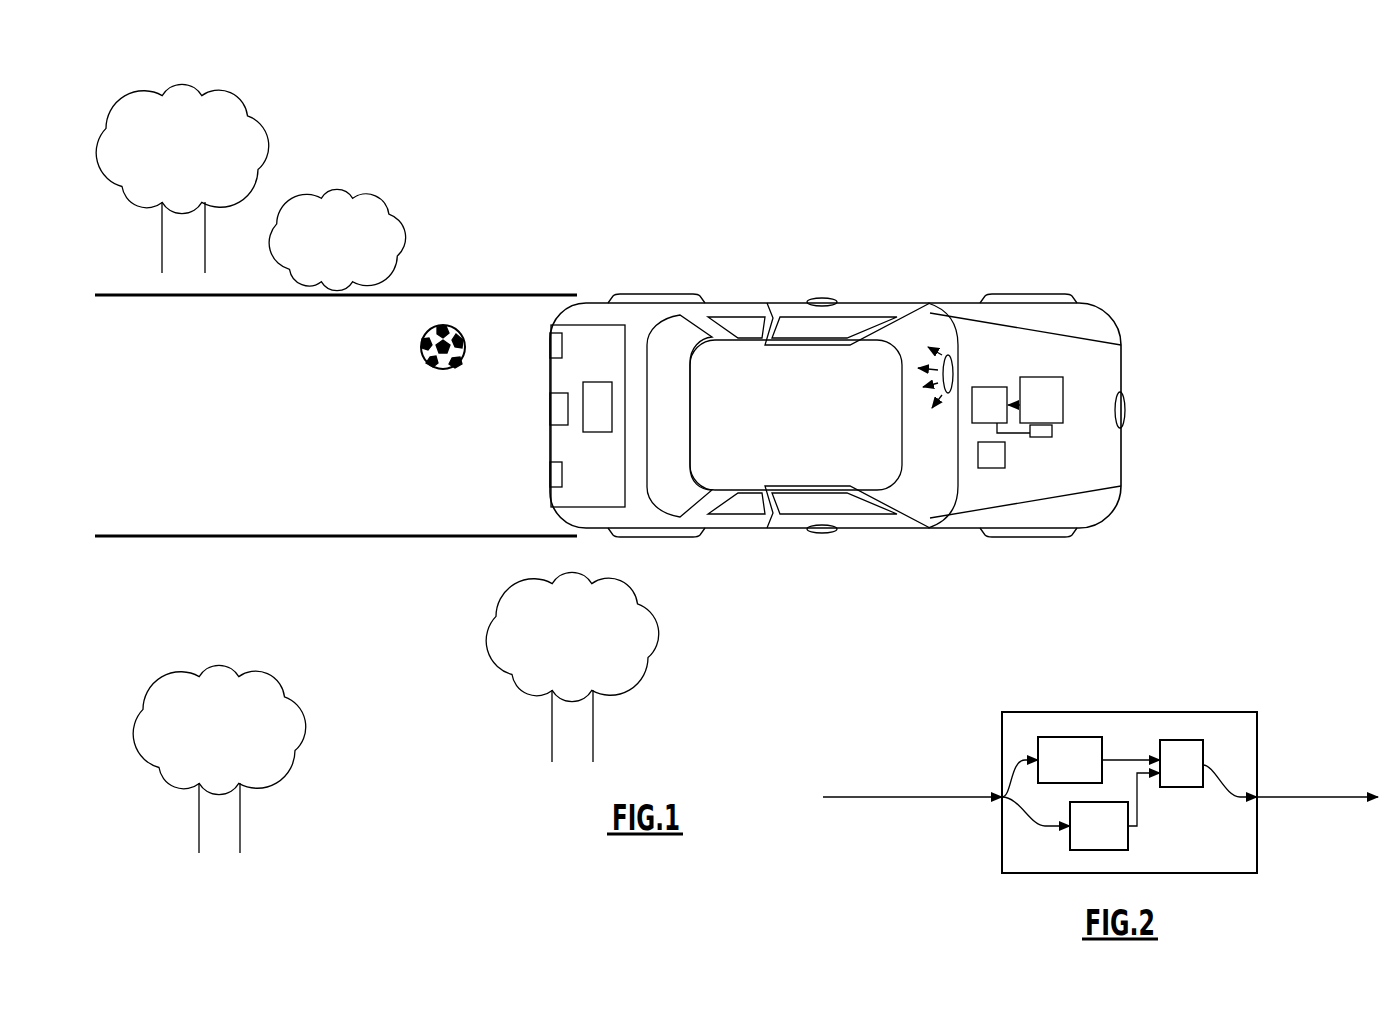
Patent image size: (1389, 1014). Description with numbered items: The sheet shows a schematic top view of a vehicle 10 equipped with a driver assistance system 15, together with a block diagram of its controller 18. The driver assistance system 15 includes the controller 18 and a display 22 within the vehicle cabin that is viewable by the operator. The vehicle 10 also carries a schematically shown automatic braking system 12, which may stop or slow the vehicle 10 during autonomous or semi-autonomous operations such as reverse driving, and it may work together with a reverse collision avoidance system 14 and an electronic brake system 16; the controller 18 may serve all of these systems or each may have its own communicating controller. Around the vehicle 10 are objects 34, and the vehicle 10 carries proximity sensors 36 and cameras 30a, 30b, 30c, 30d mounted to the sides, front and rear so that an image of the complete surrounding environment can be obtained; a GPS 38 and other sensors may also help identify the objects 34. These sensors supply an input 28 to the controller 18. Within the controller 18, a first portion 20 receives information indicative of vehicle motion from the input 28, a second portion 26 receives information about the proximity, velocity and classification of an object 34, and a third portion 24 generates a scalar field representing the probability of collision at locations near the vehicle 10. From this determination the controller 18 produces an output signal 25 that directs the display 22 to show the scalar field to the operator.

In FIG. 1, the vehicle 10 is at (750, 258).
In FIG. 1, the automatic braking system 12 is at (1043, 437).
In FIG. 1, the reverse collision avoidance system 14 is at (594, 382).
In FIG. 1, the driver assistance system 15 is at (1047, 360).
In FIG. 1, the electronic brake system 16 is at (1052, 403).
In FIG. 1, the controller 18 is at (993, 398).
In FIG. 2, the controller 18 is at (1205, 708).
In FIG. 1, the first portion 20 is at (672, 298).
In FIG. 2, the first portion 20 is at (1084, 772).
In FIG. 1, the display 22 is at (950, 395).
In FIG. 2, the third portion 24 is at (1195, 774).
In FIG. 2, the output signal 25 is at (1312, 800).
In FIG. 2, the second portion 26 is at (1113, 837).
In FIG. 2, the input 28 is at (925, 797).
In FIG. 1, the camera 30a is at (1125, 410).
In FIG. 1, the camera 30b is at (823, 298).
In FIG. 1, the camera 30c is at (823, 533).
In FIG. 1, the camera 30d is at (550, 413).
In FIG. 1, the object 34 is at (223, 178).
In FIG. 1, the proximity sensors 36 is at (550, 340).
In FIG. 1, the GPS 38 is at (997, 468).